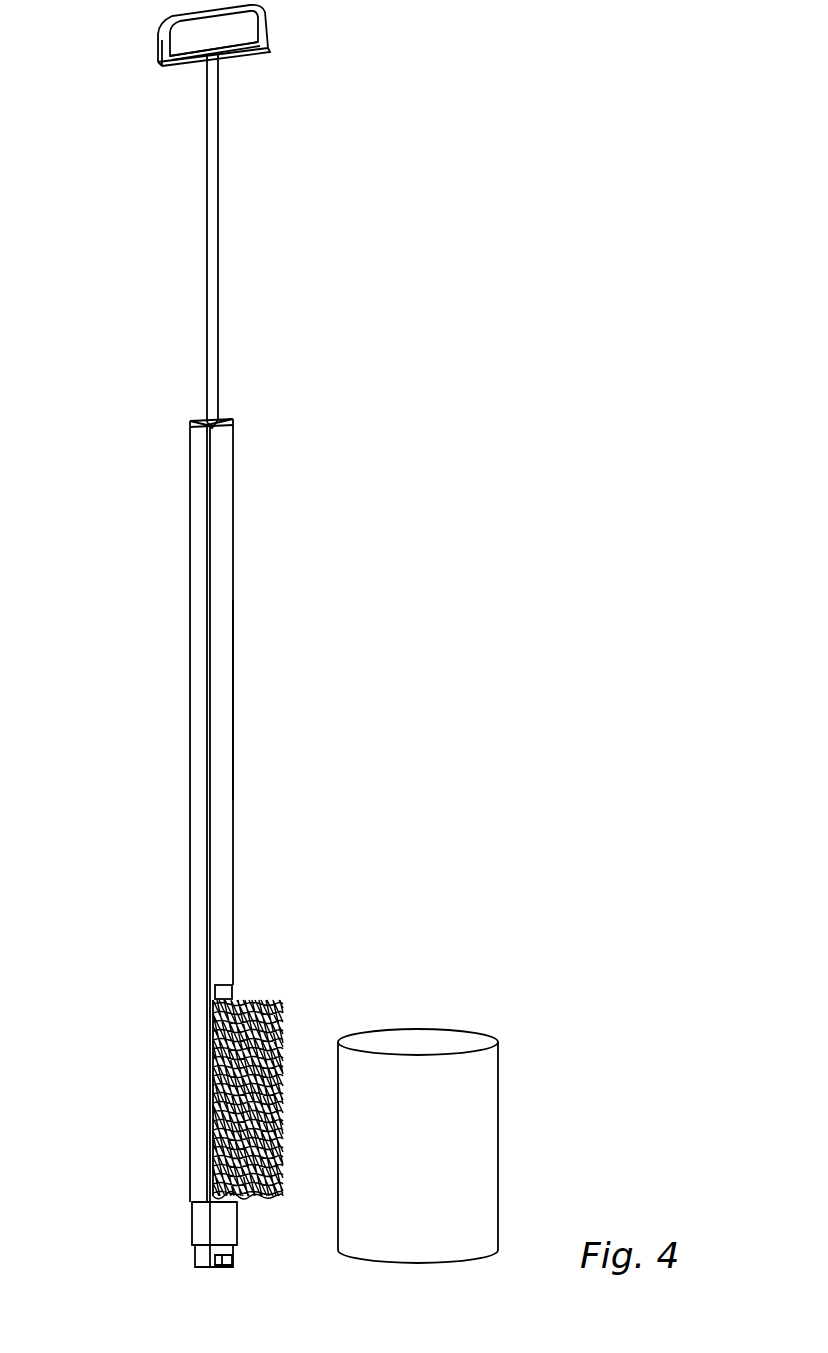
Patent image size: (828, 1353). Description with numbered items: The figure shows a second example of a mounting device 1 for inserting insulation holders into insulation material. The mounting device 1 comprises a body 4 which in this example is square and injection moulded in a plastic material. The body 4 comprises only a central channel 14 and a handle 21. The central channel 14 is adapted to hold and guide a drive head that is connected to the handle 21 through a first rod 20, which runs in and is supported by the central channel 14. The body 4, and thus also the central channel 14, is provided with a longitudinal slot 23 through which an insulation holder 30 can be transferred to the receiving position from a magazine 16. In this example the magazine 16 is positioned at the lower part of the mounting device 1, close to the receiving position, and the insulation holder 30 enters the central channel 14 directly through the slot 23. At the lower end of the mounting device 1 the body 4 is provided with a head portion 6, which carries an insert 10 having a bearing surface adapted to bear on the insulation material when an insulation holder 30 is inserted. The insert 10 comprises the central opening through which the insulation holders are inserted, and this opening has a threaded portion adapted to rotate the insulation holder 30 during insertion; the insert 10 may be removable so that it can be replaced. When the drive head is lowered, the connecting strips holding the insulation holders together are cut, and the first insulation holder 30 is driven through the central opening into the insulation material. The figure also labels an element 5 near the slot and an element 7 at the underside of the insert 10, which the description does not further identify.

The mounting device 1 is at (347, 288).
The body 4 is at (222, 606).
The cleaning head 5 is at (253, 988).
The head portion 6 is at (160, 1205).
The notch 7 is at (238, 1268).
The insert 10 is at (200, 1225).
The central channel 14 is at (246, 689).
The magazine 16 is at (480, 1108).
The first rod 20 is at (218, 258).
The handle 21 is at (268, 36).
The longitudinal slot 23 is at (238, 985).
The insulation holder 30 is at (283, 1010).